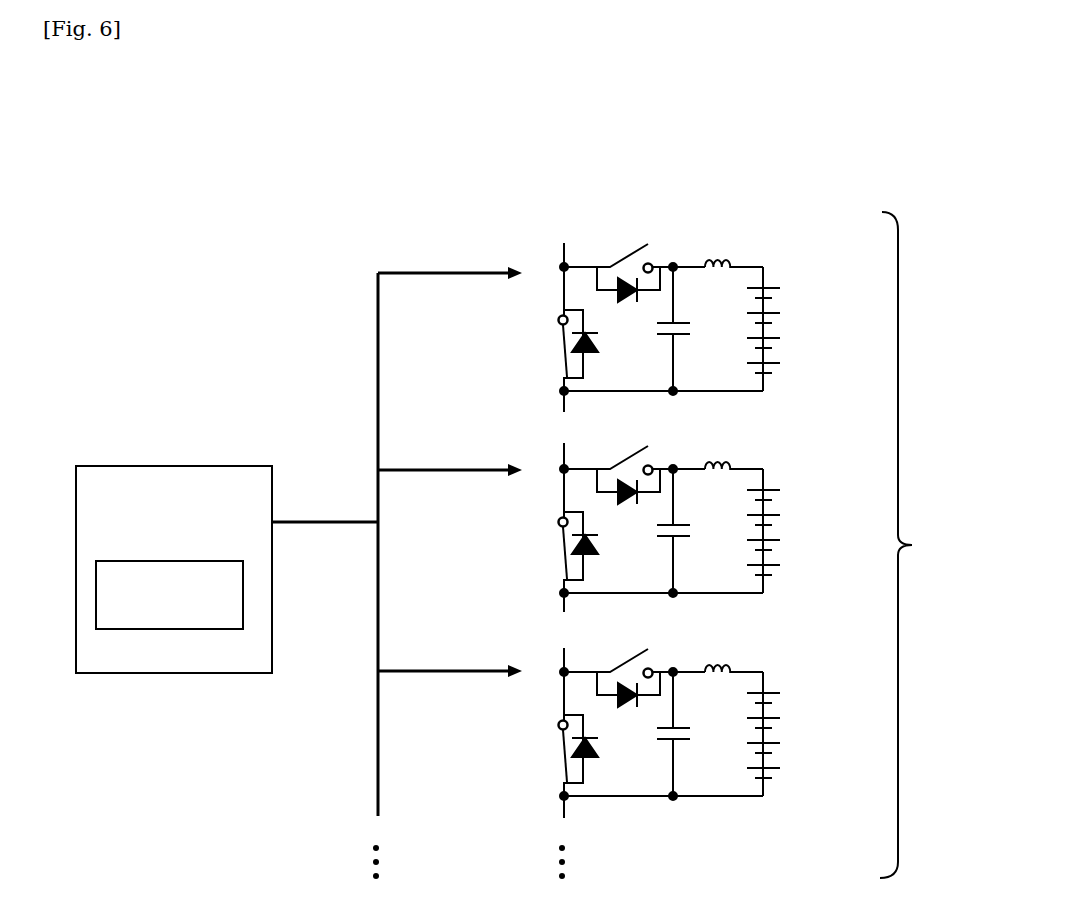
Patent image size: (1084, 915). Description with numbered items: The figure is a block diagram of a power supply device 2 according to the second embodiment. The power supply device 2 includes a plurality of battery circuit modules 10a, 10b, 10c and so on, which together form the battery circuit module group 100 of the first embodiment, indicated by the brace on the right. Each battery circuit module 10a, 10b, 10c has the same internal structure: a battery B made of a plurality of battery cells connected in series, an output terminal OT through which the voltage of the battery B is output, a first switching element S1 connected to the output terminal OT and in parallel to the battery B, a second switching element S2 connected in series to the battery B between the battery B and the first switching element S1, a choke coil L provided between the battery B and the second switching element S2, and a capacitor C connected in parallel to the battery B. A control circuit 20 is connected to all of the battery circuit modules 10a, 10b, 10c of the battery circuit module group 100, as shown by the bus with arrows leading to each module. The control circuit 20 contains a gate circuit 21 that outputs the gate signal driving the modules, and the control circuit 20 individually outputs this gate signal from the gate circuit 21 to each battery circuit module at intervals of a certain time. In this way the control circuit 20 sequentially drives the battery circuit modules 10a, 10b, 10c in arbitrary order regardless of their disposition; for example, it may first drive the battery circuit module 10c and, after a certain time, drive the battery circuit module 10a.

The power supply device 2 is at (265, 303).
The control circuit 20 is at (170, 466).
The gate circuit 21 is at (172, 629).
The battery circuit module 10a is at (686, 284).
The battery circuit module 10b is at (765, 460).
The battery circuit module 10c is at (740, 807).
The battery circuit module group 100 is at (922, 545).
The output terminal OT is at (563, 266).
The first switching element S1 is at (555, 340).
The second switching element S2 is at (628, 247).
The choke coil L is at (720, 252).
The capacitor C is at (682, 342).
The battery B is at (790, 350).